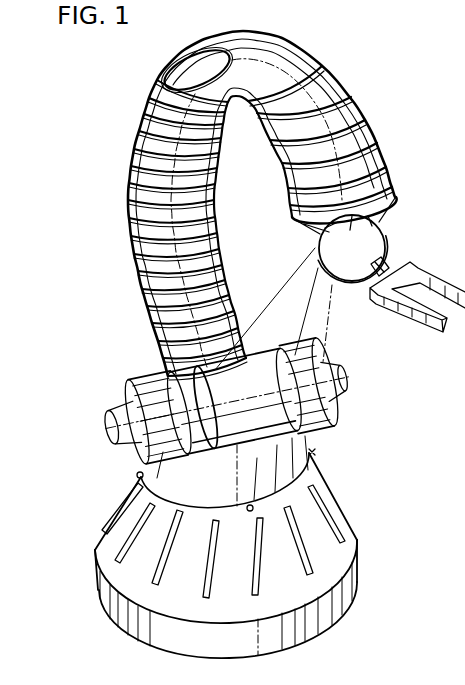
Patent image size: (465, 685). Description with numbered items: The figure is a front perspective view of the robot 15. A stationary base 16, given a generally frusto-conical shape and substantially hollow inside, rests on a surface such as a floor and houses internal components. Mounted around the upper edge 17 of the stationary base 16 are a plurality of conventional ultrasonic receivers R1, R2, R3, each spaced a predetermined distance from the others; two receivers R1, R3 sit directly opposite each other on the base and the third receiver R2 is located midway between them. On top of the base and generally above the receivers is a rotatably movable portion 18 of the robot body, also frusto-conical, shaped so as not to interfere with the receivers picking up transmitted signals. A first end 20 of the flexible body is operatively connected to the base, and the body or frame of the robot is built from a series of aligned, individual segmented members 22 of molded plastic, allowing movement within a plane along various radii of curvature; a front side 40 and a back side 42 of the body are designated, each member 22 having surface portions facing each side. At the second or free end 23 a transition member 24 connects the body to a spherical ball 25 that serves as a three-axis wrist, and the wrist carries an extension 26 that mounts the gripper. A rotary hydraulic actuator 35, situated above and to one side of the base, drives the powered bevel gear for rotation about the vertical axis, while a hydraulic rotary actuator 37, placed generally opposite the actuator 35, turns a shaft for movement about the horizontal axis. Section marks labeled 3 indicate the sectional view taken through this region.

The robot 15 is at (438, 90).
The stationary base 16 is at (366, 529).
The upper edge 17 is at (317, 458).
The rotatably movable portion 18 is at (200, 505).
The first end 20 is at (157, 366).
The individual members 22 is at (370, 118).
The second or free end 23 is at (414, 189).
The transition member 24 is at (390, 201).
The spherical ball 25 is at (387, 239).
The extension 26 is at (376, 278).
The section indicator for FIG. 3 is at (272, 342).
The rotary hydraulic actuator 35 is at (133, 400).
The hydraulic rotary actuator 37 is at (329, 382).
The front side 40 is at (182, 248).
The back side 42 is at (294, 91).
The ultrasonic receiver R1 is at (313, 452).
The ultrasonic receiver R2 is at (248, 512).
The ultrasonic receiver R3 is at (140, 474).